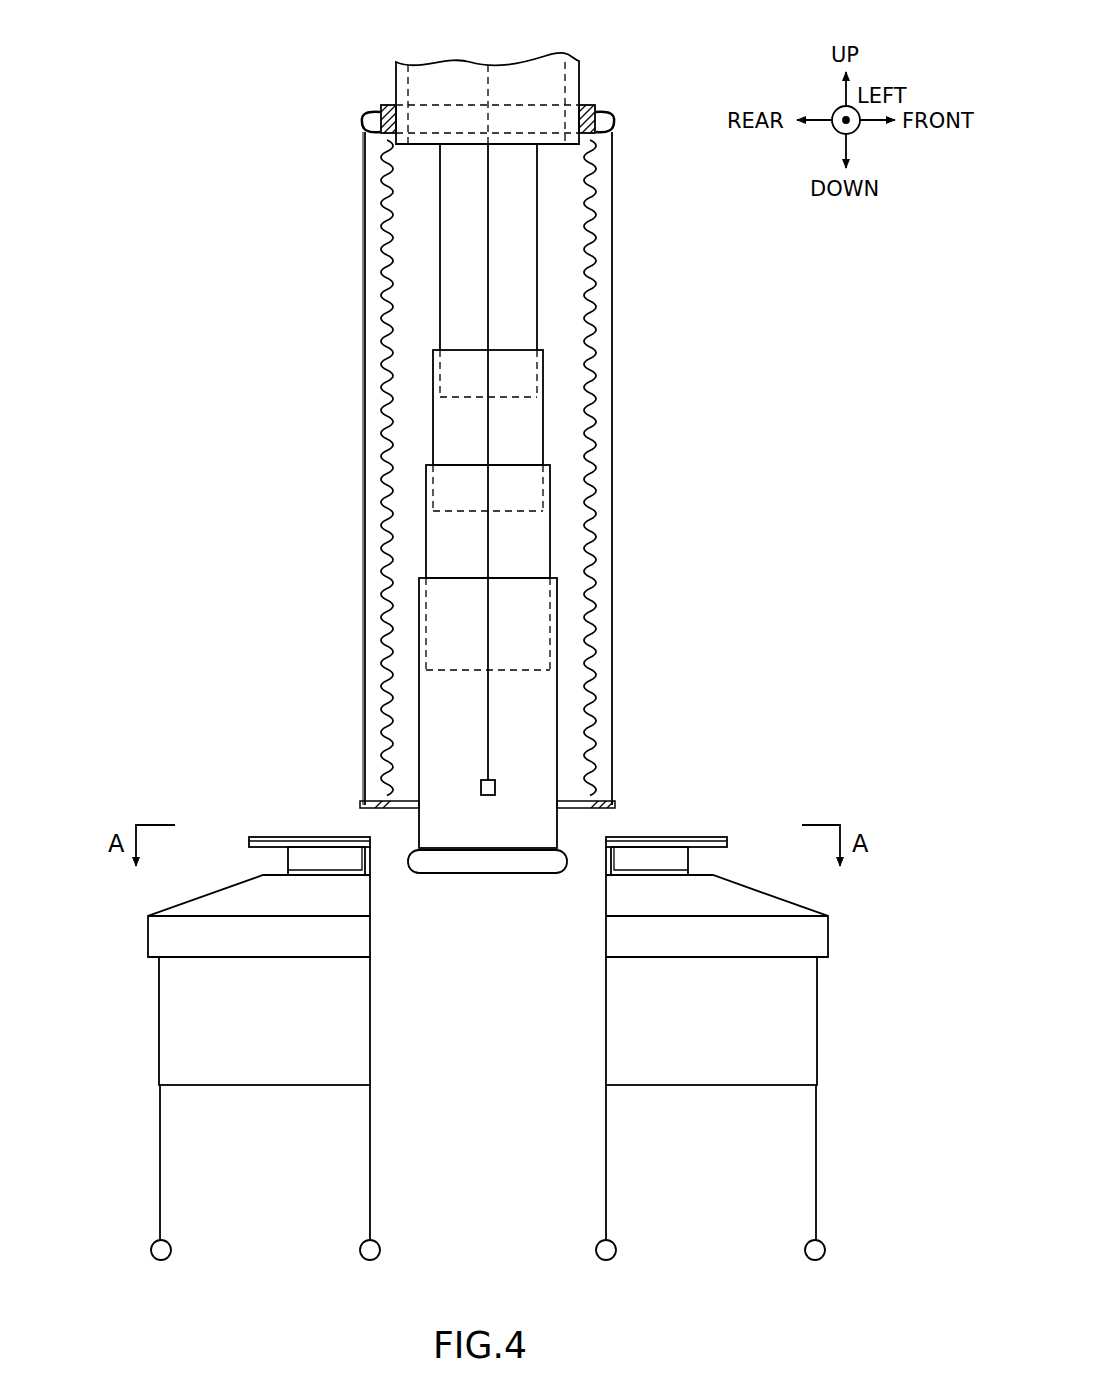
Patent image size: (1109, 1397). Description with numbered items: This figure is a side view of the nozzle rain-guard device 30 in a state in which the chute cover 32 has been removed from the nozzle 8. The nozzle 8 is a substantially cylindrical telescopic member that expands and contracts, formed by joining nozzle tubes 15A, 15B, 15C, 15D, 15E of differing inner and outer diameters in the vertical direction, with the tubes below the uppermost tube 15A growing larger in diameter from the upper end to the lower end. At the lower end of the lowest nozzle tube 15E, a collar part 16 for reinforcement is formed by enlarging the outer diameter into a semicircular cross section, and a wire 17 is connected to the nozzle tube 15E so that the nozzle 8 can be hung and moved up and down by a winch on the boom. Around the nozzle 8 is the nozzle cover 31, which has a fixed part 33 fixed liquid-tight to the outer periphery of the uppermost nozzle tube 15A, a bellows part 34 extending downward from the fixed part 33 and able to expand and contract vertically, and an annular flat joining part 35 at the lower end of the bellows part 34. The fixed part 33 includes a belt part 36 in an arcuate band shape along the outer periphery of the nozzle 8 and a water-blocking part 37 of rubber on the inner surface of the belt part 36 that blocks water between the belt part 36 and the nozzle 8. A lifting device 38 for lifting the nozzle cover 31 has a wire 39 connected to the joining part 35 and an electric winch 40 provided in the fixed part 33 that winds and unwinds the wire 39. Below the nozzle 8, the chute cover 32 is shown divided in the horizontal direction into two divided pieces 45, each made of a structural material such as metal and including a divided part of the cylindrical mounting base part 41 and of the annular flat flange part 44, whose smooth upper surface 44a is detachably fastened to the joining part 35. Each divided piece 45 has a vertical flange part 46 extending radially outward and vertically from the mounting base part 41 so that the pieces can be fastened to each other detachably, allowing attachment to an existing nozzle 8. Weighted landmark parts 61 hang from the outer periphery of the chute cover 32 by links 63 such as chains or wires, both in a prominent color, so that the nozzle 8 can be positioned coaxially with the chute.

The nozzle 8 is at (540, 210).
The uppermost nozzle tube 15A is at (513, 85).
The nozzle tube 15B is at (516, 312).
The nozzle tube 15C is at (516, 435).
The nozzle tube 15D is at (516, 545).
The nozzle tube 15E is at (516, 718).
The collar part 16 is at (510, 862).
The wire 17 is at (487, 232).
The nozzle rain-guard device 30 is at (601, 100).
The nozzle cover 31 is at (596, 255).
The chute cover 32 is at (776, 832).
The fixed part 33 is at (594, 101).
The bellows part 34 is at (600, 278).
The joining part 35 is at (616, 806).
The belt part 36 is at (383, 104).
The water-blocking part 37 is at (392, 104).
The lifting device 38 is at (358, 118).
The wire 39 is at (365, 183).
The electric winch 40 is at (368, 112).
The mounting base part 41 is at (290, 860).
The flange part 44 is at (255, 840).
The upper surface 44a is at (298, 837).
The divided piece 45 is at (142, 912).
The vertical flange part 46 is at (370, 862).
The landmark part 61 is at (151, 1250).
The link 63 is at (160, 1156).